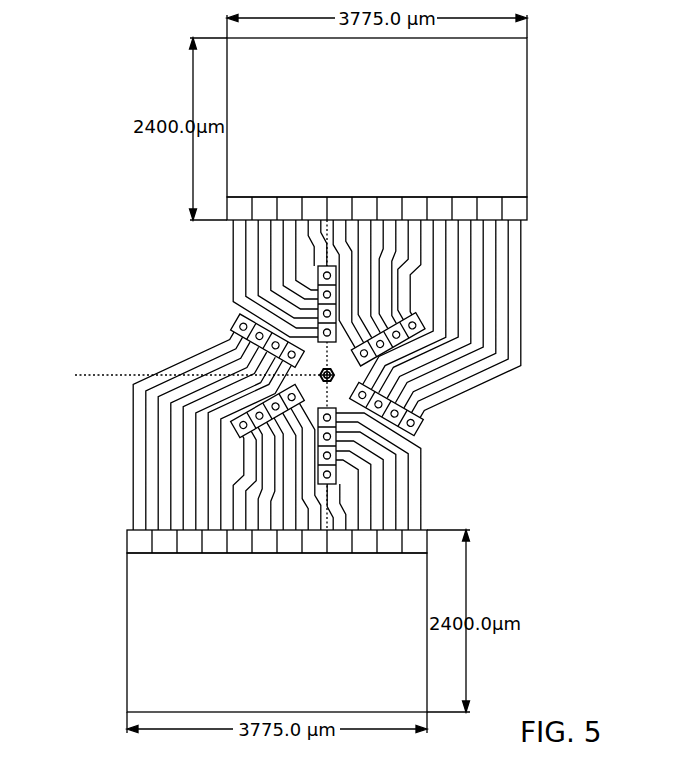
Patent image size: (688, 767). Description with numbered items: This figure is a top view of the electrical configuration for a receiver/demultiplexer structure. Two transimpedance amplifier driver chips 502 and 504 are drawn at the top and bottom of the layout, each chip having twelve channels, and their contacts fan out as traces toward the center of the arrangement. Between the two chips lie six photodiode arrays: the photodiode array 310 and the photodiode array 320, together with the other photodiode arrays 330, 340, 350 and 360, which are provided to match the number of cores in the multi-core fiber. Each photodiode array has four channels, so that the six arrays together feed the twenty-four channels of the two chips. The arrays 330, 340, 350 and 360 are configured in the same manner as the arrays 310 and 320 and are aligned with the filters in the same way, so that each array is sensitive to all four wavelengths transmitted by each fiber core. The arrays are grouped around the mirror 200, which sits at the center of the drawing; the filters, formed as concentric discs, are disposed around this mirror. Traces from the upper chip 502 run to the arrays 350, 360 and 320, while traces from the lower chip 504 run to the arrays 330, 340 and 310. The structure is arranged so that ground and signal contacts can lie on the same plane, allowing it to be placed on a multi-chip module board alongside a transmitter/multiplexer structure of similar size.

The transimpedance amplifier driver chip 502 is at (412, 93).
The transimpedance amplifier driver chip 504 is at (236, 613).
The photodiode array 350 is at (320, 266).
The photodiode array 330 is at (336, 478).
The photodiode array 360 is at (428, 320).
The photodiode array 320 is at (424, 426).
The photodiode array 310 is at (240, 322).
The photodiode array 340 is at (237, 432).
The mirror 200 is at (318, 376).